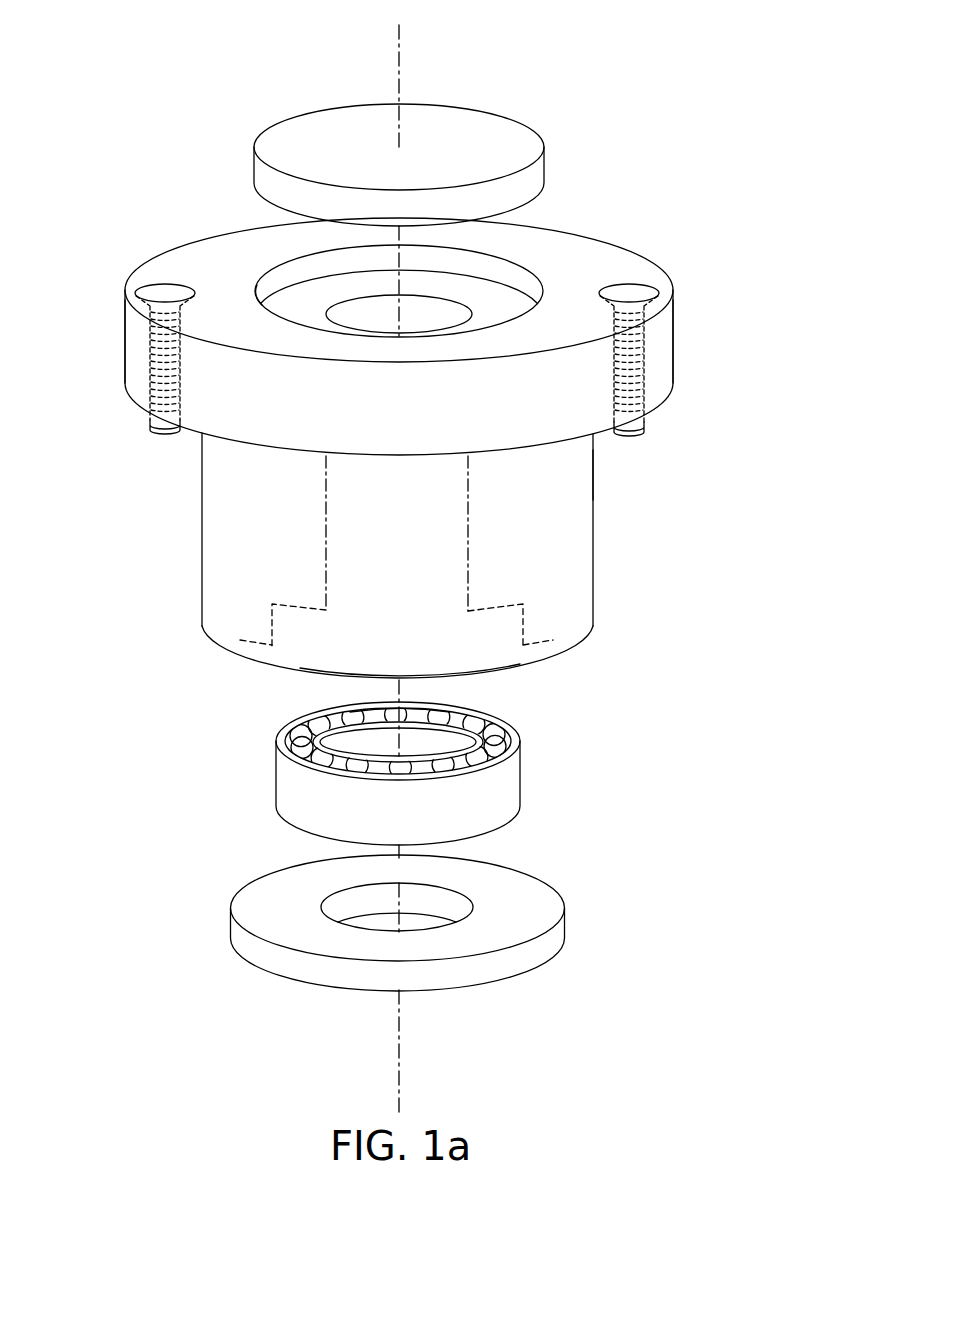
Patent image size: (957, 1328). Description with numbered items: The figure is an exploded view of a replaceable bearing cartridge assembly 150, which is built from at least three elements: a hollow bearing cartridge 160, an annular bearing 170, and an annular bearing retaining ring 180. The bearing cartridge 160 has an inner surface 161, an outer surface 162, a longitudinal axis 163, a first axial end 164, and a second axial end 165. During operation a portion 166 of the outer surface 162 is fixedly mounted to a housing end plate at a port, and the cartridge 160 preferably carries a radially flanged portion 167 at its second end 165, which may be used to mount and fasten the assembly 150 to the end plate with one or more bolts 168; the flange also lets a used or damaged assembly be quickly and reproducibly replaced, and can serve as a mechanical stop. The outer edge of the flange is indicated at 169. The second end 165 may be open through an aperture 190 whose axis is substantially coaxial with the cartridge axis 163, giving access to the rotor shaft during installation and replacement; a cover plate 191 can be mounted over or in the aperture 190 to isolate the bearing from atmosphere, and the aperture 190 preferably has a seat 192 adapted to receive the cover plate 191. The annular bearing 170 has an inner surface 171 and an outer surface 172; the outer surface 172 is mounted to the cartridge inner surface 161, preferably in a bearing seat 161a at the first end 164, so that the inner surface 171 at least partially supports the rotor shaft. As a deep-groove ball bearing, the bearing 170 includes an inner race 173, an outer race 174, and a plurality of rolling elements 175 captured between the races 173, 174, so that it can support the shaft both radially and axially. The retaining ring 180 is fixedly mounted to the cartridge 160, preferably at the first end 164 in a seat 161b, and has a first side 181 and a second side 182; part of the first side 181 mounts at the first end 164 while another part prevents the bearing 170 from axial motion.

The bearing cartridge assembly 150 is at (732, 157).
The hollow bearing cartridge 160 is at (720, 425).
The inner surface 161 is at (470, 537).
The bearing seat 161a is at (523, 634).
The seat 161b is at (240, 650).
The outer surface 162 is at (200, 514).
The longitudinal axis 163 is at (400, 65).
The first axial end 164 is at (583, 635).
The second axial end 165 is at (190, 245).
The portion of outer surface 166 is at (594, 458).
The radially flanged portion 167 is at (138, 383).
The bolts 168 is at (158, 362).
The flange outer edge 169 is at (672, 330).
The annular bearing 170 is at (680, 773).
The inner surface 171 is at (295, 714).
The outer surface 172 is at (276, 790).
The inner race 173 is at (486, 718).
The outer race 174 is at (496, 733).
The rolling elements 175 is at (506, 746).
The annular bearing retaining ring 180 is at (680, 920).
The first side 181 is at (262, 900).
The second side 182 is at (282, 990).
The aperture 190 is at (530, 264).
The cover plate 191 is at (497, 148).
The seat 192 is at (258, 297).